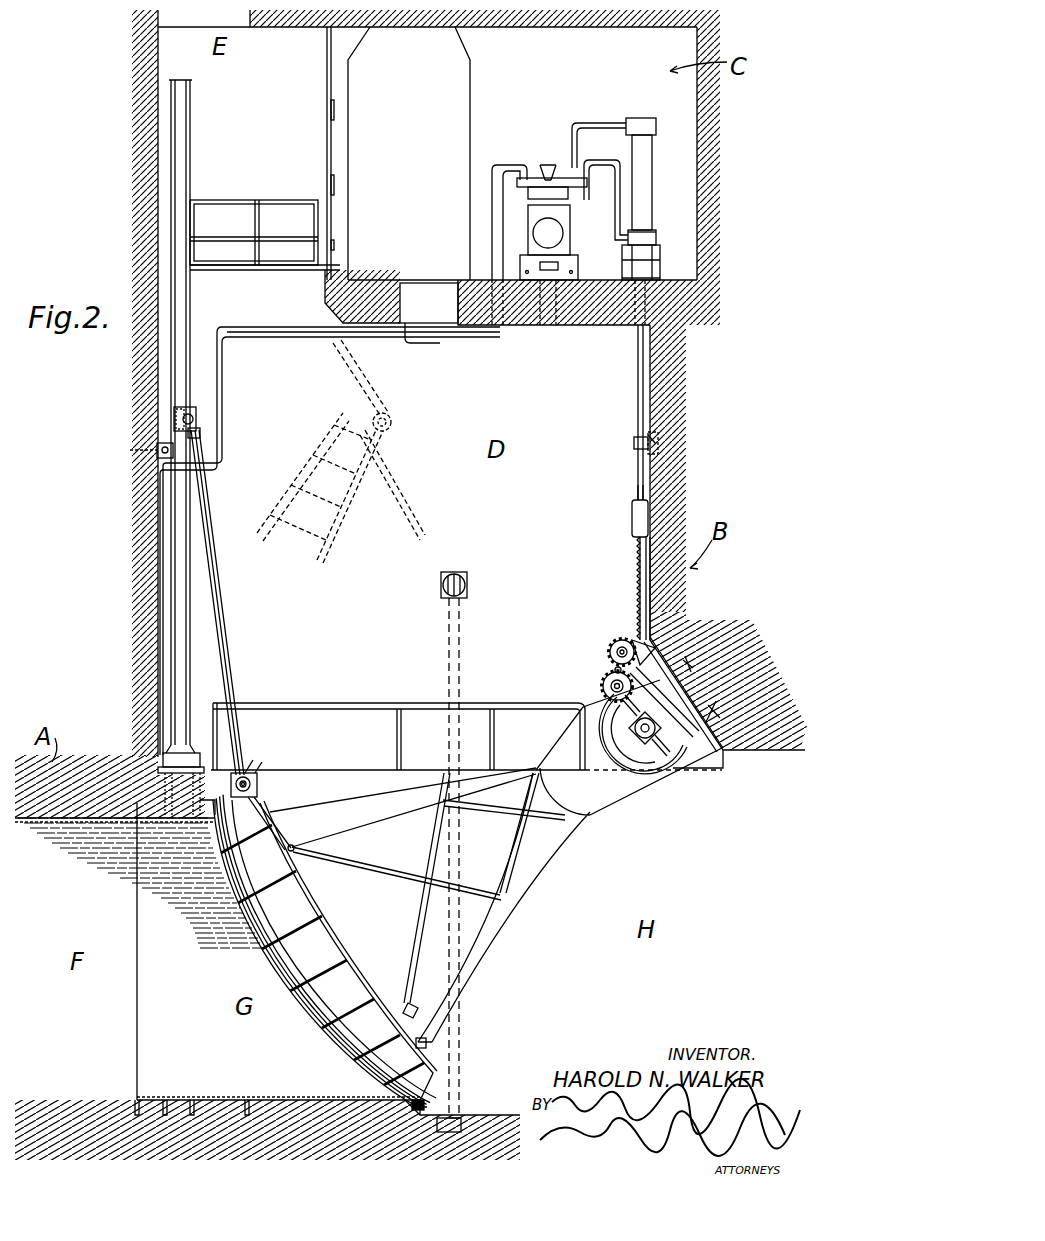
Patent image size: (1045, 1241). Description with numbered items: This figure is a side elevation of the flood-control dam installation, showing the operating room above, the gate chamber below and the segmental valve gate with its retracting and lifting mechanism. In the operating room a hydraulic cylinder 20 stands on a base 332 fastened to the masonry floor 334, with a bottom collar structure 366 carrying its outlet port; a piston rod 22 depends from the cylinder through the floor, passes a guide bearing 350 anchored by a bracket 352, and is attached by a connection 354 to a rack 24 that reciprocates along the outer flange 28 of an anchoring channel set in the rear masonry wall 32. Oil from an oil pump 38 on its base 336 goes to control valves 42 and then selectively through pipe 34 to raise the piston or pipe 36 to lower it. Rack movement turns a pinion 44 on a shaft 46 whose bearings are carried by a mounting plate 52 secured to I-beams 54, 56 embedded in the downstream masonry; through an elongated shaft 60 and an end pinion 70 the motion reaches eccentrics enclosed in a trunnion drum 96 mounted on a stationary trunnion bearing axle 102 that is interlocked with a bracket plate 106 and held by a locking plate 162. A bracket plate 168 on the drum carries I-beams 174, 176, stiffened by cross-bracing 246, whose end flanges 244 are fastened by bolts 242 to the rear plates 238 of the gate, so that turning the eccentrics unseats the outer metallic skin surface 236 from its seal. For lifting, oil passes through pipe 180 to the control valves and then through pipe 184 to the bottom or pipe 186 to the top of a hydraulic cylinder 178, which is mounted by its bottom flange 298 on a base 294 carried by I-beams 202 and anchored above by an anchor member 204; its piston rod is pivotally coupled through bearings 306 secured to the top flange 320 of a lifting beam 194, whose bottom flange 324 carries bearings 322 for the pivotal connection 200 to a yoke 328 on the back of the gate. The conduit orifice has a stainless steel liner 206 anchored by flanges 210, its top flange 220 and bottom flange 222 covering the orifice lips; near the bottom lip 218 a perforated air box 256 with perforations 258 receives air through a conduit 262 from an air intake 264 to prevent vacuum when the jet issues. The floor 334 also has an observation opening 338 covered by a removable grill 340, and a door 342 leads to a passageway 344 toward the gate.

The hydraulic cylinder 20 is at (646, 183).
The piston rod 22 is at (636, 413).
The rack 24 is at (637, 573).
The outer flange 28 is at (644, 594).
The rear masonry wall 32 is at (680, 482).
The pipe 34 is at (606, 200).
The pipe 36 is at (600, 122).
The oil pump 38 is at (563, 233).
The control valves 42 is at (545, 165).
The pinion 44 is at (632, 640).
The shaft 46 is at (610, 648).
The mounting plate 52 is at (720, 760).
The I-beam 54 is at (693, 664).
The I-beam 56 is at (722, 745).
The elongated shaft 60 is at (603, 684).
The end pinion 70 is at (608, 672).
The trunnion drum 96 is at (698, 775).
The trunnion bearing axle 102 is at (652, 724).
The bracket plate 106 is at (680, 758).
The locking plate 162 is at (662, 726).
The bracket plate 168 is at (647, 780).
The I-beam 174 is at (550, 864).
The I-beam 176 is at (395, 520).
The hydraulic cylinder 178 is at (193, 626).
The pipe 180 is at (520, 215).
The pipe 184 is at (163, 672).
The pipe 186 is at (262, 328).
The lifting beam 194 is at (224, 603).
The pivotal connection 200 is at (393, 425).
The I-beams 202 is at (205, 815).
The anchor member 204 is at (155, 452).
The metallic liner 206 is at (313, 1097).
The anchoring flanges 210 is at (247, 1115).
The bottom lip 218 is at (405, 1105).
The top flange 220 is at (215, 775).
The bottom flange 222 is at (415, 1110).
The outer metallic skin surface 236 is at (262, 955).
The rear plates 238 is at (340, 950).
The bolts 242 is at (418, 1010).
The end flanges 244 is at (427, 1048).
The cross-bracing 246 is at (400, 885).
The perforated air box 256 is at (449, 1132).
The perforations 258 is at (460, 1118).
The conduit 262 is at (465, 679).
The air intake 264 is at (462, 598).
The base 294 is at (165, 770).
The bottom flange 298 is at (170, 752).
The bearings 306 is at (197, 410).
The top flange 320 is at (200, 430).
The bearings 322 is at (258, 788).
The bottom flange 324 is at (257, 775).
The yoke 328 is at (262, 803).
The base 332 is at (665, 275).
The masonry floor 334 is at (606, 315).
The base 336 is at (548, 325).
The observation opening 338 is at (418, 335).
The removable grill 340 is at (428, 283).
The door 342 is at (333, 170).
The passageway 344 is at (254, 221).
The guide bearing 350 is at (634, 443).
The bracket 352 is at (646, 448).
The connection 354 is at (630, 516).
The bottom collar structure 366 is at (665, 233).